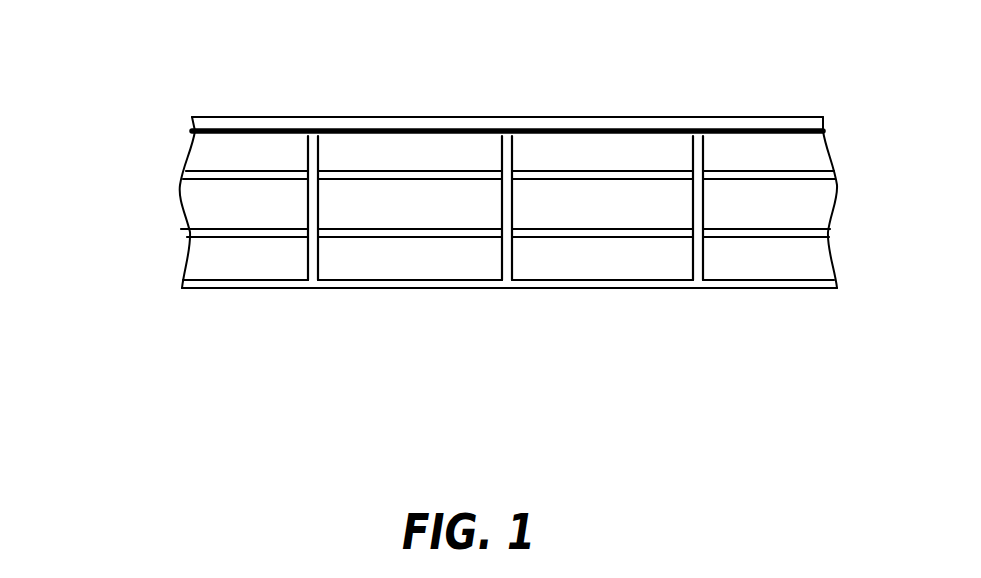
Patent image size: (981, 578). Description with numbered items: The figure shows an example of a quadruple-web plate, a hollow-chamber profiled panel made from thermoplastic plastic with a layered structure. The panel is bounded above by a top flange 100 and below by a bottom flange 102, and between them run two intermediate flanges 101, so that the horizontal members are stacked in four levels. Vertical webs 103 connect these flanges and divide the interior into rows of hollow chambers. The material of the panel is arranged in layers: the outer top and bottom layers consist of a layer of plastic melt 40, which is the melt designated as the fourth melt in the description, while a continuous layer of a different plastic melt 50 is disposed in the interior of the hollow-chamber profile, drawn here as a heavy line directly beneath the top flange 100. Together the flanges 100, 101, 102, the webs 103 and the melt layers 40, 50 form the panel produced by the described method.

The top flange 100 is at (195, 125).
The layer of plastic melt (5) 50 is at (825, 132).
The intermediate flange 101 is at (193, 175).
The bottom flange 102 is at (195, 285).
The webs 103 is at (315, 260).
The layer of plastic melt (4) 40 is at (488, 123).